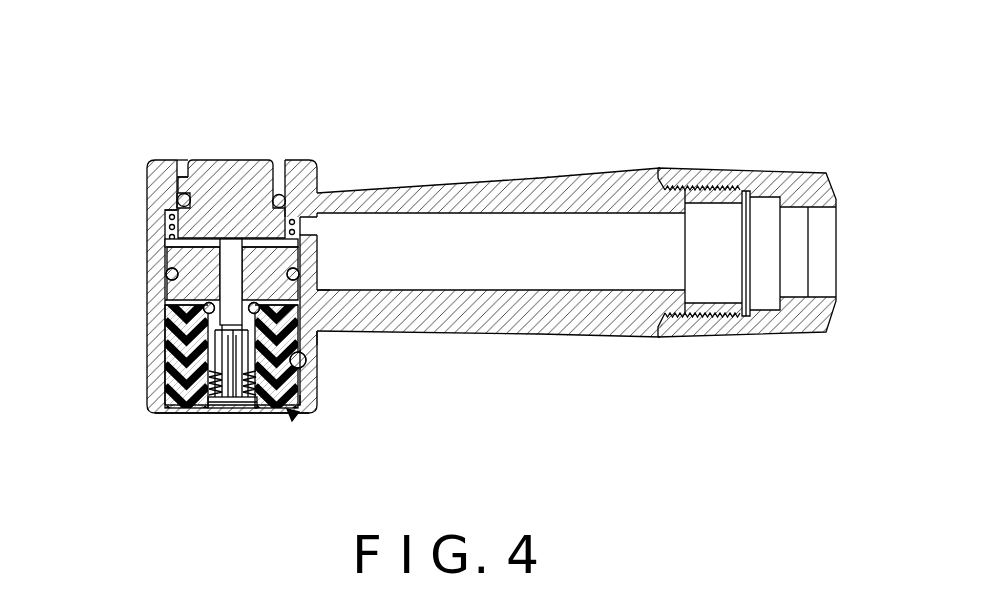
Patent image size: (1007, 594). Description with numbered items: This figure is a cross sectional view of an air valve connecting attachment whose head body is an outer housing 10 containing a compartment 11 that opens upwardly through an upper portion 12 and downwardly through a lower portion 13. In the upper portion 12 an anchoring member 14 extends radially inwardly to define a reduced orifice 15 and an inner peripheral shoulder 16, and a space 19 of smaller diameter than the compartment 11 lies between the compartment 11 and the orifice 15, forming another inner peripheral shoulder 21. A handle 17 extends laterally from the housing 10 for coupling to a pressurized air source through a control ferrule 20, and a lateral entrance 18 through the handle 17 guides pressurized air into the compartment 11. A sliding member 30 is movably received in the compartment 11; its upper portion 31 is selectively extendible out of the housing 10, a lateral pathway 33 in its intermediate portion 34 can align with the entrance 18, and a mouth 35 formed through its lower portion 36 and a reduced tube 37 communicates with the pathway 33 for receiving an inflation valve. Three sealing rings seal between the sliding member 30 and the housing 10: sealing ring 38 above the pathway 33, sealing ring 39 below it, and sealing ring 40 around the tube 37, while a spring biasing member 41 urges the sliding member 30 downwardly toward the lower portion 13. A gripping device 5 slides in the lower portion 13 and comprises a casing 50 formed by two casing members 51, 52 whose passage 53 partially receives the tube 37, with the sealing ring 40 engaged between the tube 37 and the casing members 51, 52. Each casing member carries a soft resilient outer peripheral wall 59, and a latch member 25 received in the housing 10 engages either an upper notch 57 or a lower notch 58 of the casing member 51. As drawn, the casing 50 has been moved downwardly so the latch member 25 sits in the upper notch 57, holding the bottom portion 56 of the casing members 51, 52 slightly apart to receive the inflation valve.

The gripping device 5 is at (294, 418).
The housing 10 is at (152, 365).
The compartment 11 is at (165, 266).
The upper portion 12 is at (160, 162).
The lower portion 13 is at (162, 412).
The anchoring member 14 is at (281, 196).
The orifice 15 is at (187, 168).
The inner peripheral shoulder 16 is at (178, 182).
The handle 17 is at (503, 193).
The entrance 18 is at (313, 230).
The space 19 is at (176, 175).
The control ferrule 20 is at (727, 178).
The inner peripheral shoulder 21 is at (318, 195).
The latch member 25 is at (306, 355).
The sliding member 30 is at (186, 217).
The upper portion 31 is at (246, 180).
The pathway 33 is at (232, 245).
The intermediate portion 34 is at (200, 246).
The mouth 35 is at (166, 280).
The lower portion 36 is at (322, 278).
The tube 37 is at (155, 352).
The sealing ring 38 is at (178, 198).
The sealing ring 39 is at (158, 308).
The sealing ring 40 is at (168, 333).
The spring biasing member 41 is at (167, 228).
The casing 50 is at (248, 408).
The casing member 51 is at (318, 335).
The casing member 52 is at (180, 408).
The passage 53 is at (168, 402).
The bottom portion 56 is at (231, 398).
The upper notch 57 is at (306, 365).
The lower notch 58 is at (299, 400).
The resilient outer peripheral wall 59 is at (212, 390).